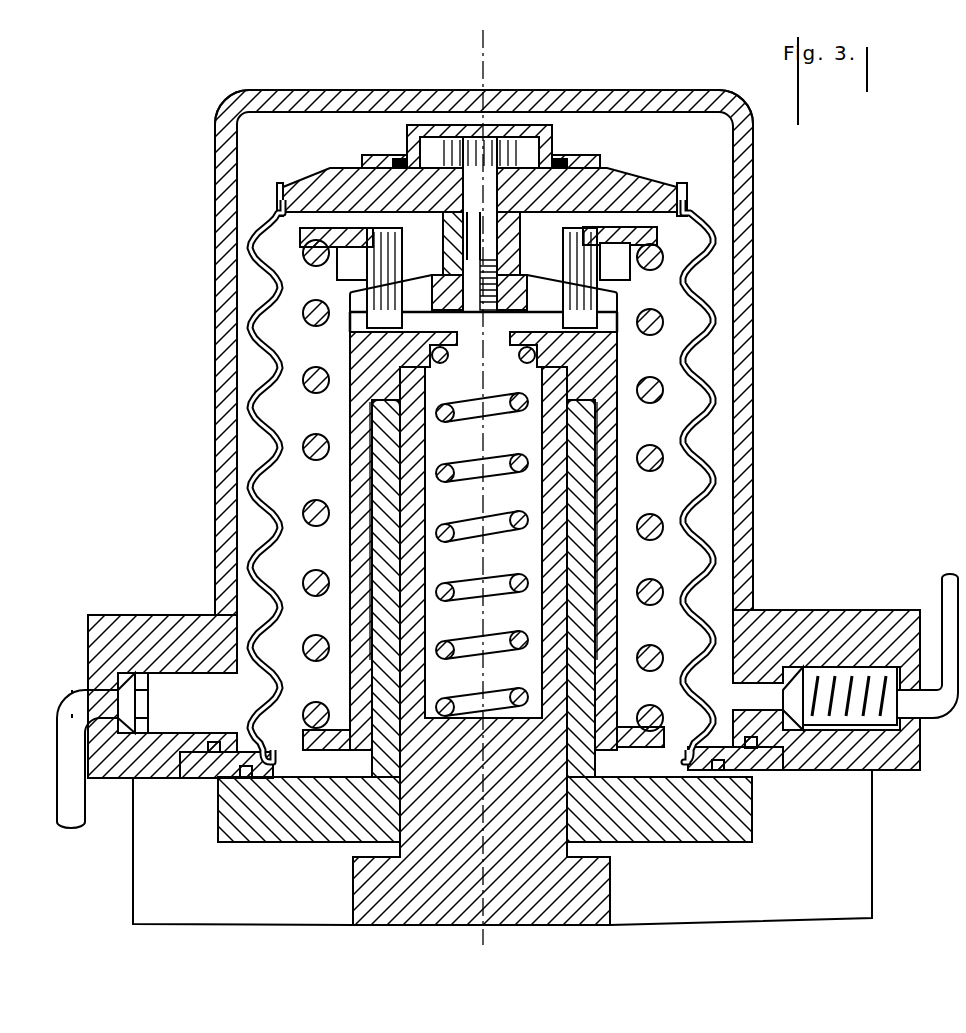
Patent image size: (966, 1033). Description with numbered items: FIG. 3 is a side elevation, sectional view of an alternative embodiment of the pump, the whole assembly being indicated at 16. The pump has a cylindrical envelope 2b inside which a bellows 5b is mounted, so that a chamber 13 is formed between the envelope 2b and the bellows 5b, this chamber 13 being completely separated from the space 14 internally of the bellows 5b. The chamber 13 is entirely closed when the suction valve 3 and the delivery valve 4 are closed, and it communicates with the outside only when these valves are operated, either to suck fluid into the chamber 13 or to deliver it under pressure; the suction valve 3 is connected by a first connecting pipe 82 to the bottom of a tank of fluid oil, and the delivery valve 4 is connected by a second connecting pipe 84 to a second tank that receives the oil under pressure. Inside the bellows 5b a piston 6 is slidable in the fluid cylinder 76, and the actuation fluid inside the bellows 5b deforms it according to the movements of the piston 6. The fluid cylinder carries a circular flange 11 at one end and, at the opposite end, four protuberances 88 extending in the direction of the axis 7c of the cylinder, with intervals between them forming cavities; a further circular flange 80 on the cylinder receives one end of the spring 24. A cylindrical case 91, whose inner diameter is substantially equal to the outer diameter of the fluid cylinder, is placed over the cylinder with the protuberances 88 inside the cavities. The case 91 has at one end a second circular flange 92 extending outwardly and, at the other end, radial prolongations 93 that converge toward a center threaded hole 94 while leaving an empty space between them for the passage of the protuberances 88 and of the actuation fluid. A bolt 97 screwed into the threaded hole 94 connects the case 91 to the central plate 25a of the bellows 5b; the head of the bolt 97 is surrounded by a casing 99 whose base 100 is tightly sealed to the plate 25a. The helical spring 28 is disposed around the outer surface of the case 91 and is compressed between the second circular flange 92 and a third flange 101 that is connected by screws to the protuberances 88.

The pressure regulator assembly 16 is at (527, 87).
The chamber 13 is at (745, 176).
The cover wall 2b is at (745, 205).
The suction valve 3 is at (132, 614).
The first connecting pipe 82 is at (78, 812).
The delivery valve 4 is at (857, 610).
The second connecting pipe 84 is at (946, 582).
The second circular flange 92 is at (314, 748).
The circular flange 11 is at (268, 832).
The axis of the cylinder 7c is at (487, 893).
The piston 6 is at (553, 876).
The piston sleeve 76 is at (384, 727).
The cylindrical case 91 is at (348, 542).
The seal ring 80 is at (450, 356).
The spring 24 is at (514, 522).
The helical spring 28 is at (312, 456).
The protuberances 88 is at (390, 250).
The third flange 101 is at (318, 238).
The radial prolongations 93 is at (419, 292).
The central plate 25a is at (650, 186).
The bolt 97 is at (486, 186).
The center threaded hole 94 is at (496, 280).
The casing 99 is at (408, 158).
The base 100 is at (560, 160).
The space 14 is at (266, 333).
The bellows 5b is at (714, 541).